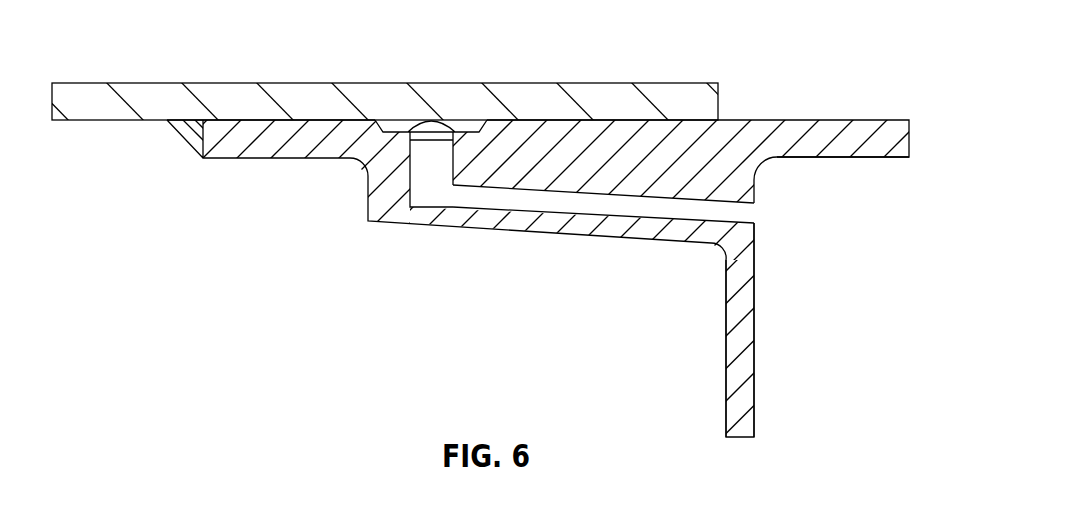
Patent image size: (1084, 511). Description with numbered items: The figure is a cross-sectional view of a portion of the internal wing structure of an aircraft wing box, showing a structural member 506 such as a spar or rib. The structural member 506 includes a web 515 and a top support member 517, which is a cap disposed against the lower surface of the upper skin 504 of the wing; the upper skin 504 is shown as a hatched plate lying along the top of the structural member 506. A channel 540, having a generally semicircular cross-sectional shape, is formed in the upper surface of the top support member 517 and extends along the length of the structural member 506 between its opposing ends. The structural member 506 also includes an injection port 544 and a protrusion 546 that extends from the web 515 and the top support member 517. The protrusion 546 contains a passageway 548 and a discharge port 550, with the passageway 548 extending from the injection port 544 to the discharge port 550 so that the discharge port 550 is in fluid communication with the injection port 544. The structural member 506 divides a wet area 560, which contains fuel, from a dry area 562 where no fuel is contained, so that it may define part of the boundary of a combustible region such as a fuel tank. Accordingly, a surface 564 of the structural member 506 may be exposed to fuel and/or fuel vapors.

The upper skin 504 is at (595, 83).
The structural member 506 is at (818, 268).
The web 515 is at (768, 390).
The top support member 517 is at (862, 158).
The channel 540 is at (432, 131).
The injection port 544 is at (770, 214).
The protrusion 546 is at (541, 247).
The passageway 548 is at (496, 193).
The discharge port 550 is at (432, 176).
The wet area 560 is at (377, 360).
The dry area 562 is at (879, 360).
The surface 564 is at (726, 382).